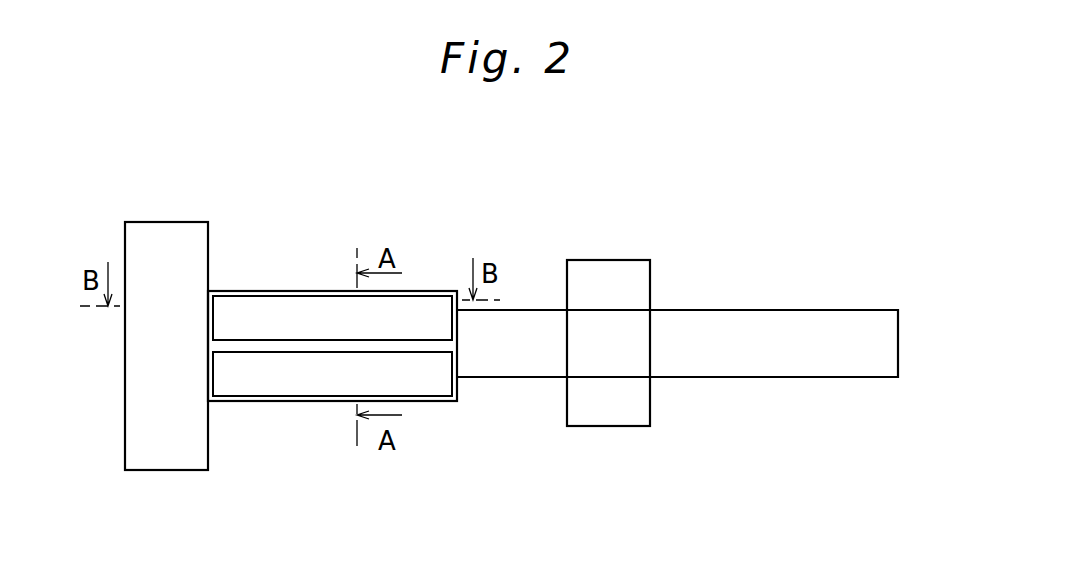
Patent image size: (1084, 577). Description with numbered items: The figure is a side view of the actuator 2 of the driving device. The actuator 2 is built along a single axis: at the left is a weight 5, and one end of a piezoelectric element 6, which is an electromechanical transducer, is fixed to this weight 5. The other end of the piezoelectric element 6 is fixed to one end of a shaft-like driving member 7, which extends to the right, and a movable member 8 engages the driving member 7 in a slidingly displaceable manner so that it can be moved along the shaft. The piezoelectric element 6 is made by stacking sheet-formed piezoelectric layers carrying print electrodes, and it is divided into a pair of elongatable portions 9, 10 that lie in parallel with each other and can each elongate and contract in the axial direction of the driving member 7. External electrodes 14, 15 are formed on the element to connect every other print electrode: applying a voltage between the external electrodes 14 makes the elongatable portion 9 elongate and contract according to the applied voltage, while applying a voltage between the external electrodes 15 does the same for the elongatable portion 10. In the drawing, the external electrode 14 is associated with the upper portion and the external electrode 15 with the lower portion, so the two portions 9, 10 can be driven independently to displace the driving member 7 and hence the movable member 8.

The actuator 2 is at (508, 212).
The weight 5 is at (160, 222).
The piezoelectric element 6 is at (306, 288).
The driving member 7 is at (760, 309).
The movable member 8 is at (605, 260).
The elongatable portion 9 is at (246, 290).
The elongatable portion 10 is at (250, 402).
The external electrode 14 is at (417, 310).
The external electrode 15 is at (420, 378).